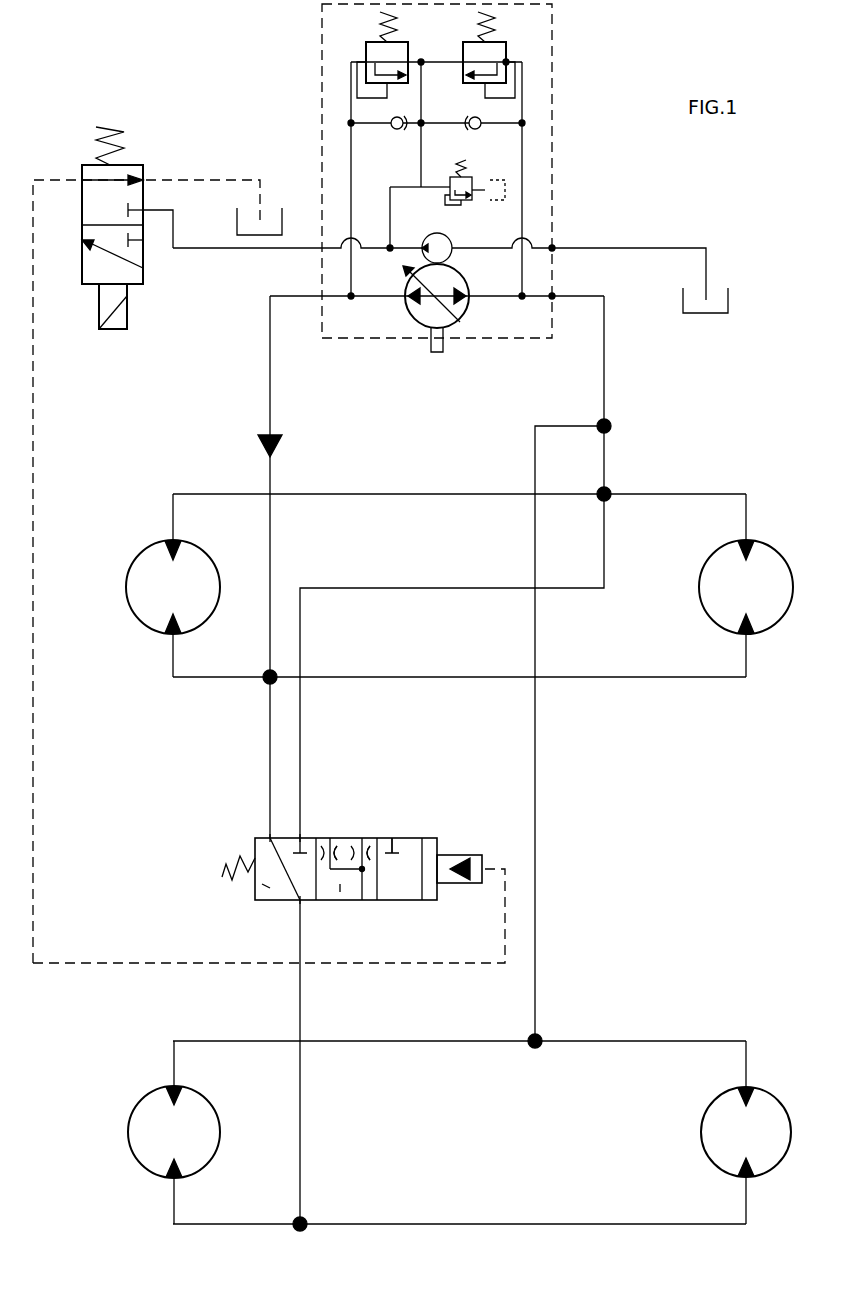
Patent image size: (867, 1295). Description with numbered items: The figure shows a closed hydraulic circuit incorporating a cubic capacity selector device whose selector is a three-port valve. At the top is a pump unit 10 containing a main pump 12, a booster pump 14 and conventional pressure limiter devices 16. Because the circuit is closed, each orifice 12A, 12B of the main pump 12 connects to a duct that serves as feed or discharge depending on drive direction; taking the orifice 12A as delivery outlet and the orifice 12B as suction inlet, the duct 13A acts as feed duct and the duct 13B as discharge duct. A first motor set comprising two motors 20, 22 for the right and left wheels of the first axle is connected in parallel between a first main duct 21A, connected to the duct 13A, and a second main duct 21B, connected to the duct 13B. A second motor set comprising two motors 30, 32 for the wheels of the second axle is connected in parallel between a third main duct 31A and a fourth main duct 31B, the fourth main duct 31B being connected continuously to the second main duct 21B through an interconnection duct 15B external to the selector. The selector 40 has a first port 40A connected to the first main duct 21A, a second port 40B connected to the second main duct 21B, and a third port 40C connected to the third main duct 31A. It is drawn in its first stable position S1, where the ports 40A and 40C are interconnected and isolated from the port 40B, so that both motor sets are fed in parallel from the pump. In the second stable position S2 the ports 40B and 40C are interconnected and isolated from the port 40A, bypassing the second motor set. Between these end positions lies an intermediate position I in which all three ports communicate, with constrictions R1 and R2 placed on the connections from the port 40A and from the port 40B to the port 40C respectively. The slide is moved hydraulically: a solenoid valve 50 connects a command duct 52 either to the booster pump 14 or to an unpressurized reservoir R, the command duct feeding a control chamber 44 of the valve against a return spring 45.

The pump unit 10 is at (552, 172).
The main pump 12 is at (413, 331).
The pump orifice 12A is at (414, 322).
The pump orifice 12B is at (460, 322).
The feed duct 13A is at (269, 360).
The discharge duct 13B is at (604, 358).
The booster pump 14 is at (452, 243).
The interconnection duct 15B is at (535, 788).
The pressure limiter devices 16 is at (513, 48).
The motor 20 is at (782, 554).
The first main duct 21A is at (413, 678).
The second main duct 21B is at (413, 493).
The motor 22 is at (140, 552).
The motor 30 is at (780, 1100).
The third main duct 31A is at (461, 1223).
The fourth main duct 31B is at (461, 1040).
The motor 32 is at (142, 1100).
The selector 40 is at (210, 847).
The first port 40A is at (270, 838).
The second port 40B is at (304, 836).
The third port 40C is at (300, 900).
The control chamber 44 is at (455, 855).
The return spring 45 is at (221, 876).
The solenoid valve 50 is at (82, 164).
The command duct 52 is at (33, 468).
The unpressurized reservoir R is at (238, 220).
The constriction R1 is at (340, 850).
The constriction R2 is at (374, 856).
The first stable position S1 is at (265, 888).
The second stable position S2 is at (408, 838).
The intermediate position I is at (340, 888).